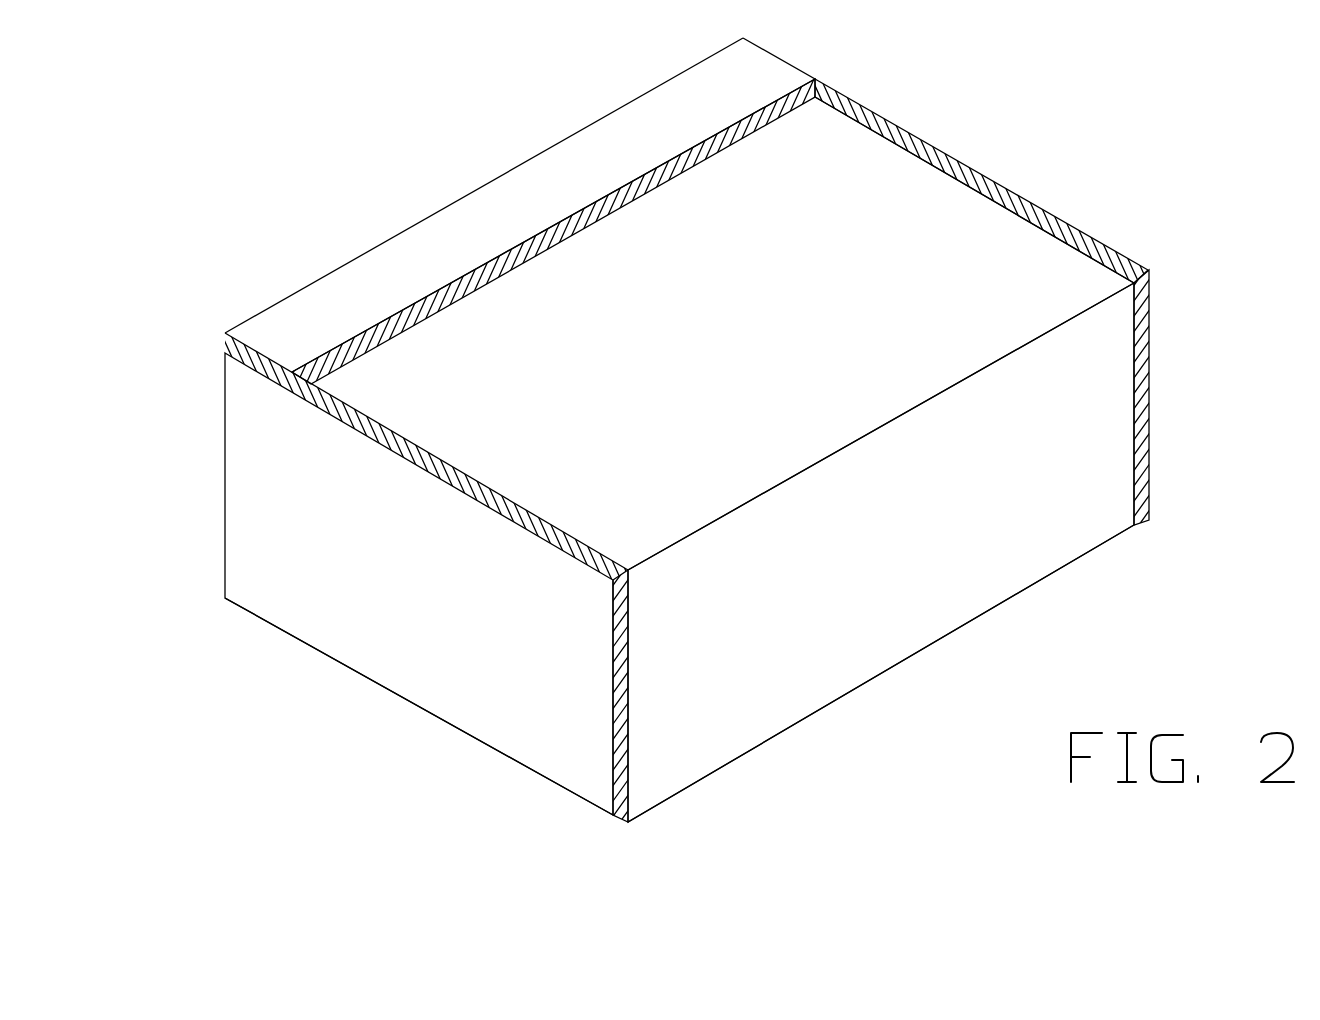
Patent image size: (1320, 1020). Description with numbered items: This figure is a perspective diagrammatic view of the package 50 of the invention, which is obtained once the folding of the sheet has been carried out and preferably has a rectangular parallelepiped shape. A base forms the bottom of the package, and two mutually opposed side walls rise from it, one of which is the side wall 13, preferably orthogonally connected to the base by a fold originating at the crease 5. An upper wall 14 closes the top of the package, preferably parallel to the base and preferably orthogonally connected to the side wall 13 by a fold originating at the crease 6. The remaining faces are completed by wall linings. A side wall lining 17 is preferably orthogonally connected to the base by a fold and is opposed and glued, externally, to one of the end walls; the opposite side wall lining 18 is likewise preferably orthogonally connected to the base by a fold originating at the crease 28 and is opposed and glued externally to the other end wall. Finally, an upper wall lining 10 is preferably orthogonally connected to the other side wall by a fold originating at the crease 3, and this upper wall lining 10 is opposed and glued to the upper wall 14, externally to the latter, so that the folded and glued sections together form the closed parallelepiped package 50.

The package 50 is at (223, 215).
The crease 3 is at (565, 137).
The upper wall lining 10 is at (475, 218).
The side wall lining 17 is at (1050, 212).
The crease 6 is at (812, 465).
The upper wall 14 is at (955, 333).
The side wall 13 is at (907, 613).
The side wall lining 18 is at (382, 640).
The crease 28 is at (484, 742).
The crease 5 is at (800, 722).